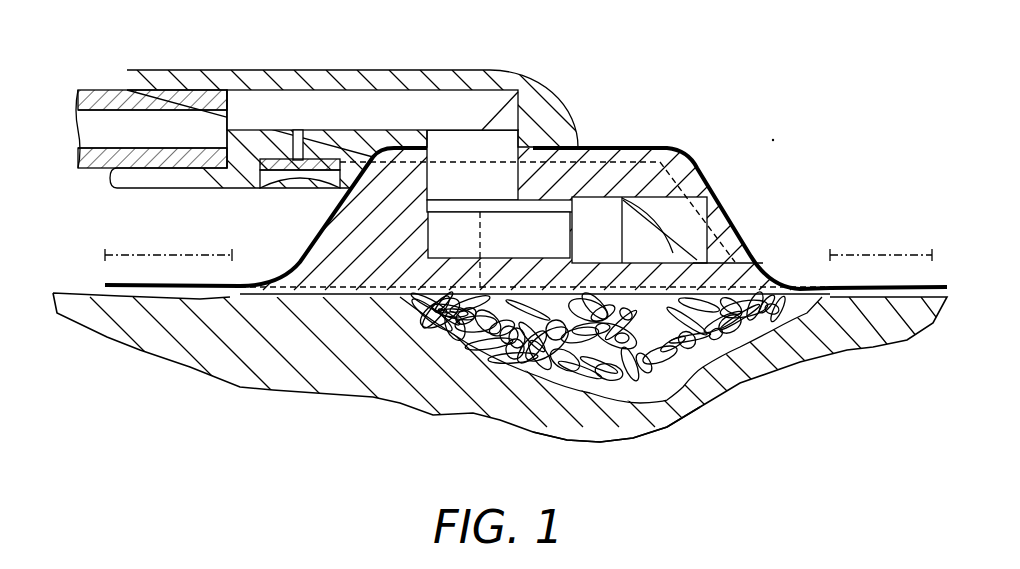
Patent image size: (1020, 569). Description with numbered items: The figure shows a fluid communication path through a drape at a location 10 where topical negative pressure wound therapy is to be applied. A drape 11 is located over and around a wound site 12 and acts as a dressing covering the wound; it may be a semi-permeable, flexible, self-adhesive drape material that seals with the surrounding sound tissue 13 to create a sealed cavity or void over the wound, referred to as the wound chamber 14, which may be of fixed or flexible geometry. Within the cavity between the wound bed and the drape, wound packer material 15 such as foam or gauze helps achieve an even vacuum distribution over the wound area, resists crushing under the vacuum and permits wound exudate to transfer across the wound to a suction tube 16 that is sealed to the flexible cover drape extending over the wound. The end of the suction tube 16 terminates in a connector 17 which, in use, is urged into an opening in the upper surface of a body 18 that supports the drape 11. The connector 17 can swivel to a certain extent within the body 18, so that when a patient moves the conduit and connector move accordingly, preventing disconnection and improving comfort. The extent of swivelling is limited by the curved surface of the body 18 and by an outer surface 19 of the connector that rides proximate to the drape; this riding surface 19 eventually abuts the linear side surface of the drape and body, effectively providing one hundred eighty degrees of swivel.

The location 10 is at (502, 269).
The drape 11 is at (707, 181).
The wound site 12 is at (641, 427).
The sound tissue 13 is at (155, 338).
The wound chamber 14 is at (672, 388).
The wound packer material 15 is at (533, 370).
The suction tube 16 is at (103, 170).
The connector 17 is at (448, 70).
The body 18 is at (636, 157).
The outer surface 19 is at (350, 171).